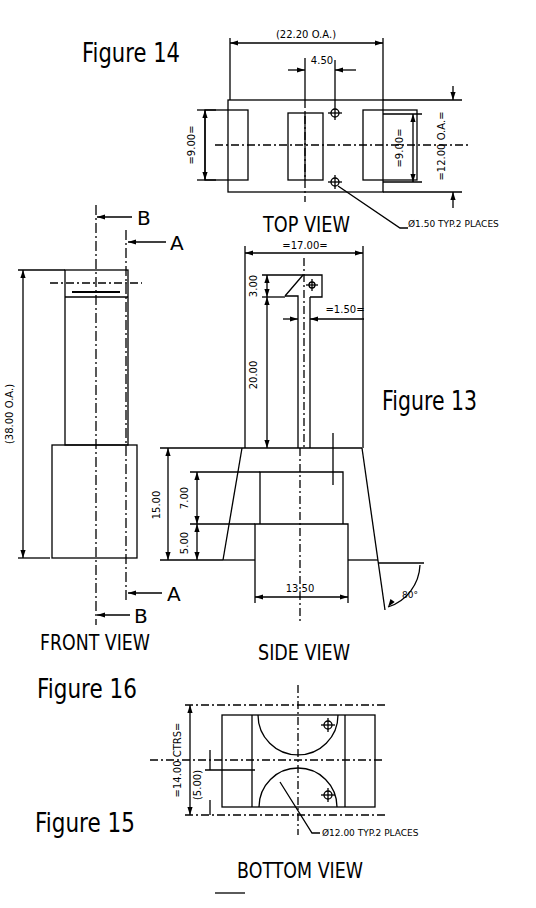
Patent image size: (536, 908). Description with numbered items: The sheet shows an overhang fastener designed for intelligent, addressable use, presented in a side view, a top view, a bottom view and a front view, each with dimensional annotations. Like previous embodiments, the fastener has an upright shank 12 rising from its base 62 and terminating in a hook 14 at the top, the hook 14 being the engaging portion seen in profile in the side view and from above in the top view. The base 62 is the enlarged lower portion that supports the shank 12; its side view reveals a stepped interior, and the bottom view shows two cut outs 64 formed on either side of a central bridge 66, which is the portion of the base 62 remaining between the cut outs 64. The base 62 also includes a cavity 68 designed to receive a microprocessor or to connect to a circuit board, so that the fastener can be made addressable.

In FIG. 16, the shank 12 is at (108, 352).
In FIG. 13, the shank 12 is at (303, 366).
In FIG. 14, the hook 14 is at (314, 129).
In FIG. 16, the hook 14 is at (128, 278).
In FIG. 13, the hook 14 is at (316, 284).
In FIG. 14, the base 62 is at (260, 116).
In FIG. 13, the base 62 is at (366, 484).
In FIG. 15, the base 62 is at (370, 779).
In FIG. 13, the cut outs 64 is at (330, 509).
In FIG. 15, the cut outs 64 is at (321, 726).
In FIG. 15, the bridge 66 is at (328, 756).
In FIG. 13, the cavity 68 is at (333, 548).